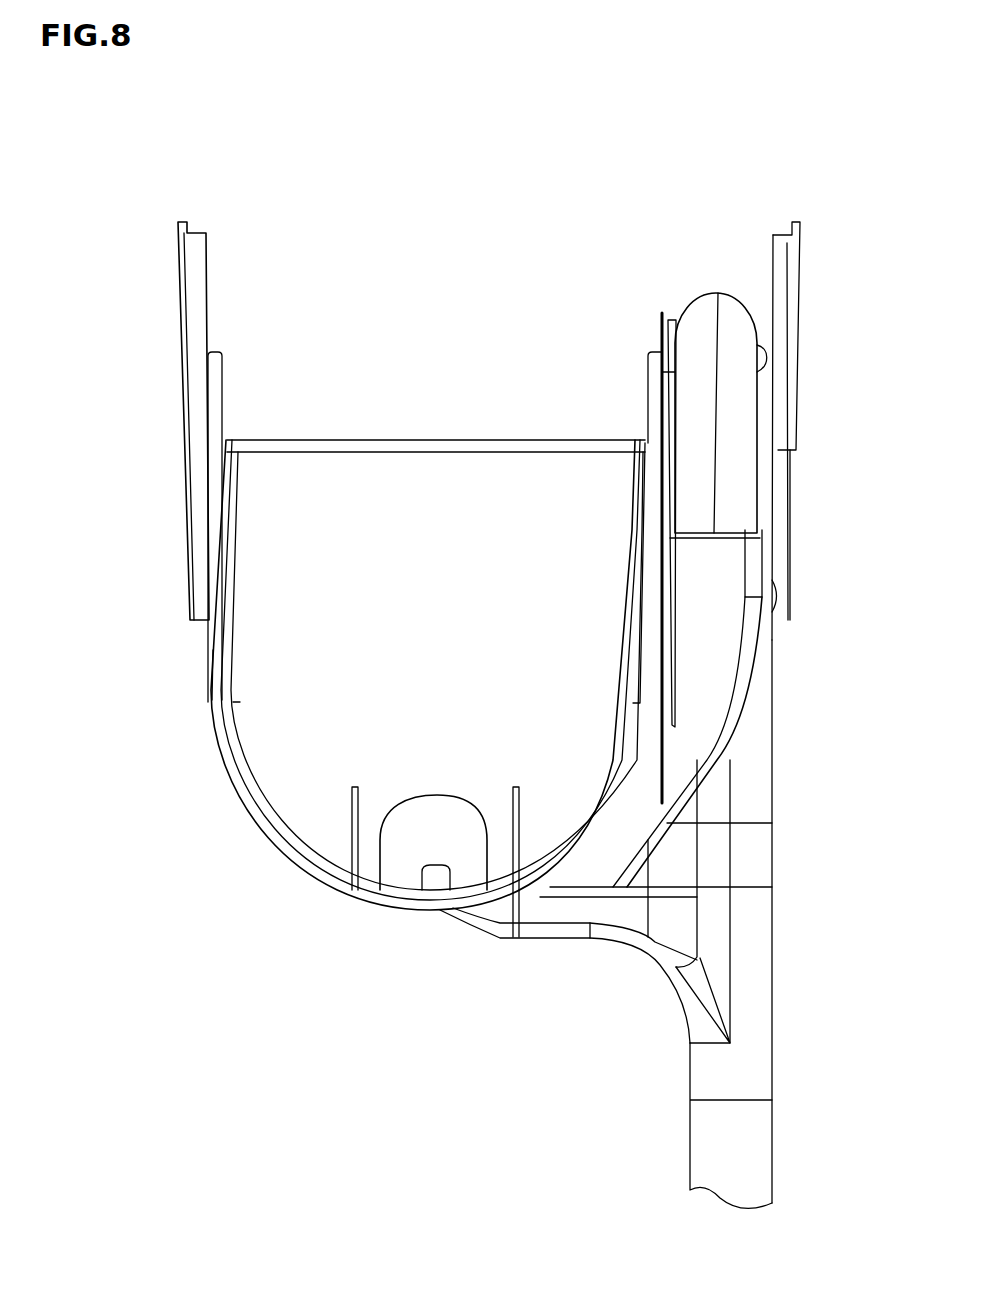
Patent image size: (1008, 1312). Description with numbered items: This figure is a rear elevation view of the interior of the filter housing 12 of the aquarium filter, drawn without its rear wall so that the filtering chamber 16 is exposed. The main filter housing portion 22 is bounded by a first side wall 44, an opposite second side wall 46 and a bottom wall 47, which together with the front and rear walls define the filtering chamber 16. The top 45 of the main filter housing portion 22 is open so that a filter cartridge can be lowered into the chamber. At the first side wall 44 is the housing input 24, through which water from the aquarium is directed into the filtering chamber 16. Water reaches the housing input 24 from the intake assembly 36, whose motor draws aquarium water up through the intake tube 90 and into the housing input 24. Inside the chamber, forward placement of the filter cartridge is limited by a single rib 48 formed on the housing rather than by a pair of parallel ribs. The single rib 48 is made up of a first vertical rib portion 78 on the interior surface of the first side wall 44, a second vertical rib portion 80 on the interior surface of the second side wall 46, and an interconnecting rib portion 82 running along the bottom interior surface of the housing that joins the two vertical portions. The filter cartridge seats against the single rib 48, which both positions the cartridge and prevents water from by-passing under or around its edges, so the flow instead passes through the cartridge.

The filter housing 12 is at (132, 298).
The top 45 is at (505, 255).
The intake tube 90 is at (737, 337).
The first vertical rib portion 78 is at (222, 400).
The second vertical rib portion 80 is at (652, 408).
The second side wall 46 is at (207, 598).
The single rib 48 is at (240, 617).
The filtering chamber 16 is at (446, 645).
The first side wall 44 is at (667, 627).
The housing input 24 is at (772, 637).
The main filter housing portion 22 is at (370, 675).
The interconnecting rib portion 82 is at (368, 883).
The bottom wall 47 is at (372, 903).
The intake assembly 36 is at (790, 980).